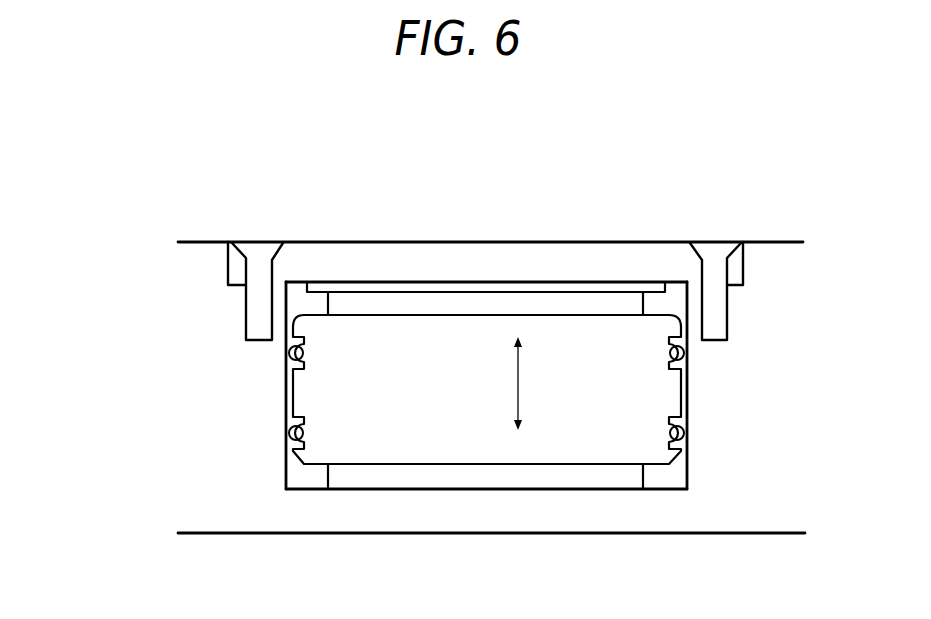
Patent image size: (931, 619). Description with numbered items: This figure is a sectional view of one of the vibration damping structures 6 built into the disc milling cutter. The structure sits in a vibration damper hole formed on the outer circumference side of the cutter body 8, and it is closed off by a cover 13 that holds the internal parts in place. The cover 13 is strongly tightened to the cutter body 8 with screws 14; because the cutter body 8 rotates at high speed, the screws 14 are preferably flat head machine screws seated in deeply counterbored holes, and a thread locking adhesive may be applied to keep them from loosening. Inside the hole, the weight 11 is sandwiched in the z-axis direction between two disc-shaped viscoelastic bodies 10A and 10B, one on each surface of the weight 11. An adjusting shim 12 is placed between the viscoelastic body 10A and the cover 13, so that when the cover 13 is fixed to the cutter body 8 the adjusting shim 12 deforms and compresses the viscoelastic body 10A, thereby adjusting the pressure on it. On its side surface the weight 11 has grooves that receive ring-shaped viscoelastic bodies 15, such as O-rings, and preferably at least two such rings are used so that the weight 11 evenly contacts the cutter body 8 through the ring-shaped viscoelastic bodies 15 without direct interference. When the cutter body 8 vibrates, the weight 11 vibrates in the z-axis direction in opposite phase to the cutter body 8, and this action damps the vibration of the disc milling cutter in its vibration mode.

The vibration damping structure 6 is at (408, 217).
The cutter body 8 is at (210, 333).
The viscoelastic body 10A is at (613, 303).
The viscoelastic body 10B is at (550, 477).
The weight 11 is at (625, 422).
The adjusting shim 12 is at (572, 288).
The cover 13 is at (463, 258).
The screw 14 is at (258, 249).
The ring-shaped viscoelastic body 15 is at (285, 431).